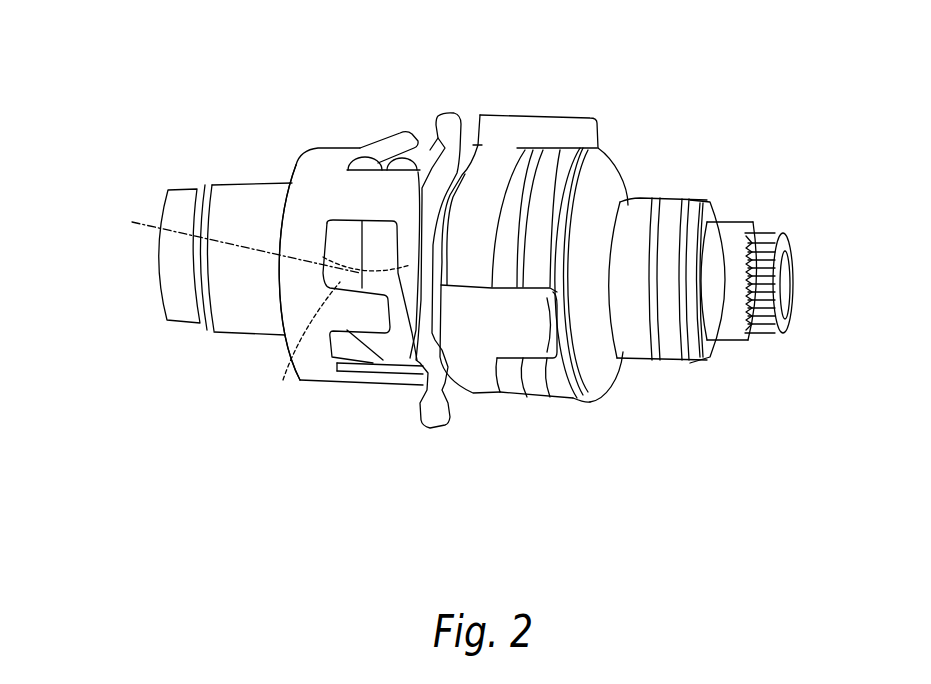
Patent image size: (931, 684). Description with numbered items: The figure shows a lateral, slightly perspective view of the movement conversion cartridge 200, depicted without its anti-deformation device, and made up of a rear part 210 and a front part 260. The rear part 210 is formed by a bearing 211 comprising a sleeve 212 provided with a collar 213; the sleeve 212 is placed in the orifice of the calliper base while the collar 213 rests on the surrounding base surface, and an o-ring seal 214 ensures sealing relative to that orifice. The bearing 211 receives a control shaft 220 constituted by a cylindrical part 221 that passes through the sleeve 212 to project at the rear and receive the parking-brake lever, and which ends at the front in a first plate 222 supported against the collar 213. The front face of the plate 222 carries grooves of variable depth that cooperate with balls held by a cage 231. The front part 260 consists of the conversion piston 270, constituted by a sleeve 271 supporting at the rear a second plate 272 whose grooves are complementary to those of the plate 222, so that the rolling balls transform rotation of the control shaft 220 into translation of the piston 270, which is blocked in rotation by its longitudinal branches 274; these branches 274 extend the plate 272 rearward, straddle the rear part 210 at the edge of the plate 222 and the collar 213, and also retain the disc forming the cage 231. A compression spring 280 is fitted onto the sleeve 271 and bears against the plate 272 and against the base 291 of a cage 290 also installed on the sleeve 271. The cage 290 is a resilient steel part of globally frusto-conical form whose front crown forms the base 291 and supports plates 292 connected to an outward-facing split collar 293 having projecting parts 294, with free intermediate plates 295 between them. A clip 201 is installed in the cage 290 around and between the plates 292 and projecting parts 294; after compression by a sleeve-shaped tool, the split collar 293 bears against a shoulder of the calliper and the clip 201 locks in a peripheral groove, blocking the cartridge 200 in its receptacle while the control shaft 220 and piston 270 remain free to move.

The movement conversion cartridge 200 is at (412, 80).
The clip 201 is at (393, 170).
The rear part 210 is at (781, 458).
The bearing 211 is at (783, 160).
The sleeve 212 is at (641, 223).
The collar 213 is at (608, 195).
The o-ring seal 214 is at (672, 205).
The control shaft 220 is at (769, 283).
The cylindrical part 221 is at (716, 317).
The first plate 222 is at (580, 150).
The cage 231 is at (548, 150).
The front part 260 is at (503, 457).
The conversion piston 270 is at (148, 288).
The sleeve 271 is at (248, 298).
The plate 272 is at (477, 217).
The branches 274 is at (527, 133).
The compression spring 280 is at (286, 378).
The cage 290 is at (322, 147).
The base 291 is at (290, 173).
The plates 292 is at (370, 352).
The split collar 293 is at (134, 222).
The projecting parts 294 is at (340, 365).
The intermediate plates 295 is at (450, 130).